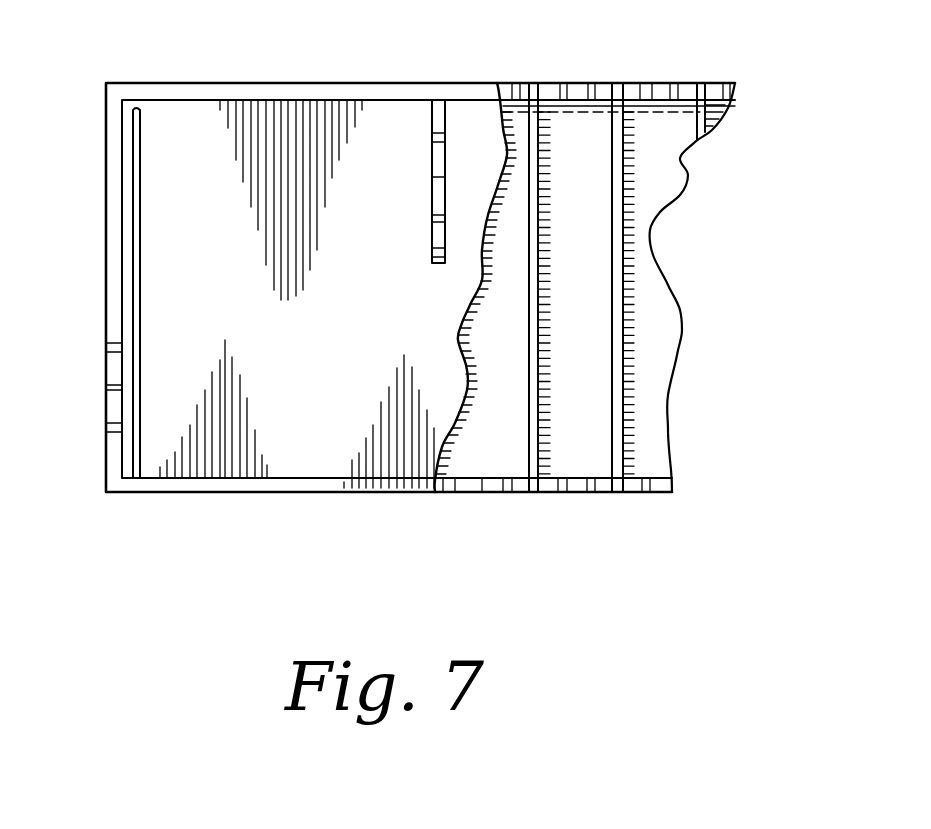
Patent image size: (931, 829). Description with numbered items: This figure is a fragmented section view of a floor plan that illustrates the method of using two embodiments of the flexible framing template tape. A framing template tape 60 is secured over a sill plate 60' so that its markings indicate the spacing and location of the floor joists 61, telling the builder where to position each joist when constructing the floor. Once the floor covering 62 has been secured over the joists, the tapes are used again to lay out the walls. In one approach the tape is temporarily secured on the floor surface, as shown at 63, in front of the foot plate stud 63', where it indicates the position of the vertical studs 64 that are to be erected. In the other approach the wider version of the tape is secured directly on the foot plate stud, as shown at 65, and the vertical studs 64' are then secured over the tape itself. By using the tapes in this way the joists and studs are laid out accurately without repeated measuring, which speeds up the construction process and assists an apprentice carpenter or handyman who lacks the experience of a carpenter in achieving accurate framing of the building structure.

The framing template tape 60 is at (539, 283).
The sill plate 60' is at (634, 283).
The floor joists 61 is at (622, 165).
The floor covering 62 is at (425, 332).
The tape temporarily secured on floor surface 63 is at (182, 293).
The foot plate stud 63' is at (381, 287).
The vertical studs 64 is at (77, 387).
The vertical studs 64' is at (400, 195).
The wider tape secured on foot plate stud 65 is at (432, 158).